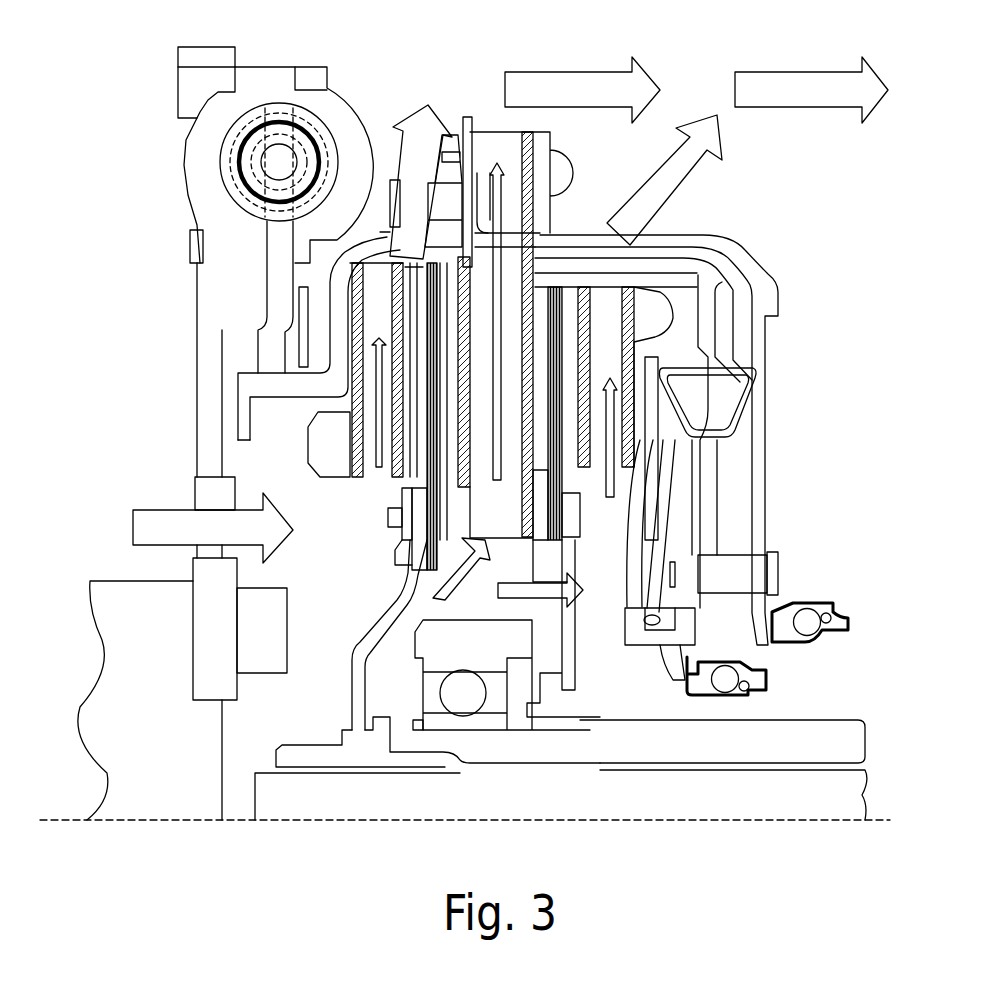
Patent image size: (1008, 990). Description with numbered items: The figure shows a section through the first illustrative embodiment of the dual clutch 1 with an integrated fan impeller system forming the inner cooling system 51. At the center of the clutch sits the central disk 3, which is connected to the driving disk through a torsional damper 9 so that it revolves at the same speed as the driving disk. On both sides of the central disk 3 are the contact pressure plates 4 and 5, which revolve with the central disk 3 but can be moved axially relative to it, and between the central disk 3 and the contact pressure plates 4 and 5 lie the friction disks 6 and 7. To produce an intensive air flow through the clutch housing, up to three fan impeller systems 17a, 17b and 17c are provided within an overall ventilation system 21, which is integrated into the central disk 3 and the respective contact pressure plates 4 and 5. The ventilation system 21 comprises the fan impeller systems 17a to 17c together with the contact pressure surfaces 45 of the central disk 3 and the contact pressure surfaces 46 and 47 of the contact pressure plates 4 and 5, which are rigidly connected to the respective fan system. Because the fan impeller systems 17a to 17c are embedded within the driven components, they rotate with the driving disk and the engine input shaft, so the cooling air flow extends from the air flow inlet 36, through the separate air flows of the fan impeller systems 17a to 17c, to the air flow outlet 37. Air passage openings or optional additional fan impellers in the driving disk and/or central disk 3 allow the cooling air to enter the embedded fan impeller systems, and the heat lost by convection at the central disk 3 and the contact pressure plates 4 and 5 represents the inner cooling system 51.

The dual clutch 1 is at (703, 235).
The central disk 3 is at (520, 506).
The contact pressure plate 4 is at (363, 287).
The contact pressure plate 5 is at (610, 283).
The friction disk 6 is at (372, 408).
The friction disk 7 is at (540, 433).
The torsional damper 9 is at (255, 120).
The fan impeller system 17a is at (580, 462).
The fan impeller system 17b is at (470, 437).
The fan impeller system 17c is at (427, 352).
The ventilation system 21 is at (508, 397).
The air flow inlet 36 is at (150, 510).
The air flow outlet 37 is at (808, 90).
The contact pressure surfaces 45 is at (465, 267).
The contact pressure surface 46 is at (390, 285).
The contact pressure surface 47 is at (593, 352).
The inner cooling system 51 is at (157, 447).